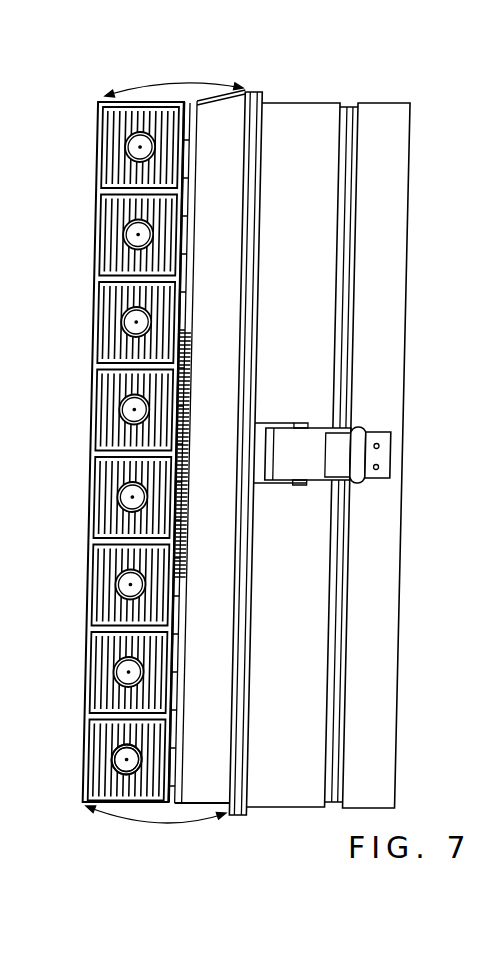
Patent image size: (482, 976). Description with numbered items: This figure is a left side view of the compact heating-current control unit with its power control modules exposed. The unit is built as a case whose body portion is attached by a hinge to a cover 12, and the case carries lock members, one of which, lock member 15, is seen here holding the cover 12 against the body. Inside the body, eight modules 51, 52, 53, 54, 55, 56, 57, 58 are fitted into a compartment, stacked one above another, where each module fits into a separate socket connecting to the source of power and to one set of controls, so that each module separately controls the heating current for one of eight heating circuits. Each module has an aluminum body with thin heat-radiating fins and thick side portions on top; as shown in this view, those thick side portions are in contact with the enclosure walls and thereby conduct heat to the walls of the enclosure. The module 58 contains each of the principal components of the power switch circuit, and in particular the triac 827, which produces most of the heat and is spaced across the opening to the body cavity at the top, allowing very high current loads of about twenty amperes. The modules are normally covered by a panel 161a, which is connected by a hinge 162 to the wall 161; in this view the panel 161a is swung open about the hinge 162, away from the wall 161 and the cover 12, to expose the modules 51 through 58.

The cover 12 is at (388, 122).
The lock member 15 is at (282, 437).
The wall 161 is at (272, 113).
The panel 161a is at (257, 103).
The hinge 162 is at (190, 340).
The module 51 is at (105, 145).
The module 52 is at (103, 226).
The module 53 is at (103, 312).
The module 54 is at (100, 407).
The module 55 is at (98, 488).
The module 56 is at (98, 571).
The module 57 is at (95, 663).
The module 58 is at (92, 740).
The triac 827 is at (120, 758).